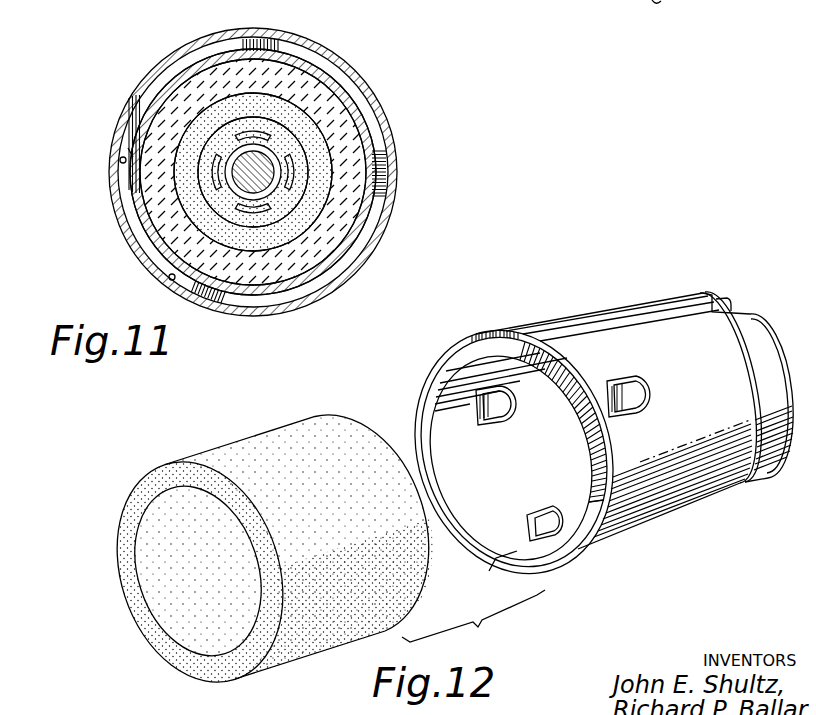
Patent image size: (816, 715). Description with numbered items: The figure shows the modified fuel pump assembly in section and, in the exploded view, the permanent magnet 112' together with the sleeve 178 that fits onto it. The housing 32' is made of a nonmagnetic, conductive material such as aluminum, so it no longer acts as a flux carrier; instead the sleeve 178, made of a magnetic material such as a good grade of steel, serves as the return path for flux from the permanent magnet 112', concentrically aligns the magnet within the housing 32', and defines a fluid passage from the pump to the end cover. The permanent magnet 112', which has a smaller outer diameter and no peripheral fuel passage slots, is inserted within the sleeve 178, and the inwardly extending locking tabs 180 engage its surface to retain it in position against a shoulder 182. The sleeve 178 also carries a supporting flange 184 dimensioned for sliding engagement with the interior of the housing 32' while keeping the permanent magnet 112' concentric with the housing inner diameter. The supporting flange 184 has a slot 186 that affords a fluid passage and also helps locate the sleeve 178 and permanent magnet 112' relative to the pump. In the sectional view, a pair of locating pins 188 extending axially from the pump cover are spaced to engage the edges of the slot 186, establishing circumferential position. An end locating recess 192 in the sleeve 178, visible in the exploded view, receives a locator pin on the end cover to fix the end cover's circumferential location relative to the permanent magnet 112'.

In FIG. 11, the housing 32' is at (229, 172).
In FIG. 11, the permanent magnet 112' is at (277, 172).
In FIG. 12, the permanent magnet 112' is at (261, 532).
In FIG. 11, the sleeve 178 is at (132, 201).
In FIG. 12, the sleeve 178 is at (633, 300).
In FIG. 11, the locking tabs 180 is at (168, 97).
In FIG. 12, the locking tabs 180 is at (632, 385).
In FIG. 12, the shoulder 182 is at (760, 452).
In FIG. 11, the supporting flange 184 is at (368, 117).
In FIG. 12, the supporting flange 184 is at (463, 340).
In FIG. 11, the slot 186 is at (130, 153).
In FIG. 12, the slot 186 is at (583, 543).
In FIG. 11, the locating pins 188 is at (120, 160).
In FIG. 12, the end locating recess 192 is at (737, 313).